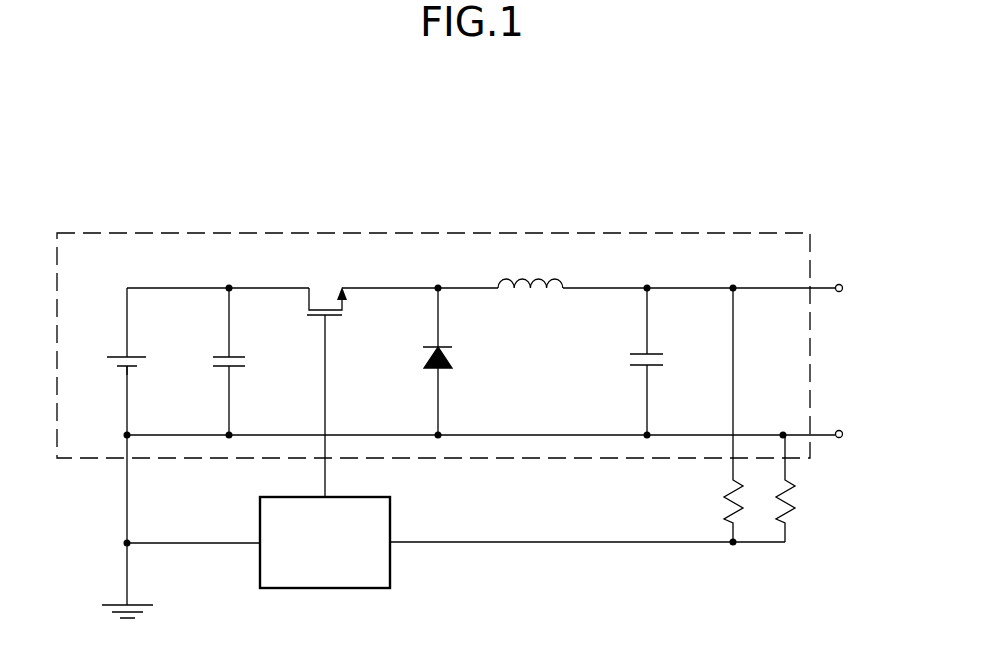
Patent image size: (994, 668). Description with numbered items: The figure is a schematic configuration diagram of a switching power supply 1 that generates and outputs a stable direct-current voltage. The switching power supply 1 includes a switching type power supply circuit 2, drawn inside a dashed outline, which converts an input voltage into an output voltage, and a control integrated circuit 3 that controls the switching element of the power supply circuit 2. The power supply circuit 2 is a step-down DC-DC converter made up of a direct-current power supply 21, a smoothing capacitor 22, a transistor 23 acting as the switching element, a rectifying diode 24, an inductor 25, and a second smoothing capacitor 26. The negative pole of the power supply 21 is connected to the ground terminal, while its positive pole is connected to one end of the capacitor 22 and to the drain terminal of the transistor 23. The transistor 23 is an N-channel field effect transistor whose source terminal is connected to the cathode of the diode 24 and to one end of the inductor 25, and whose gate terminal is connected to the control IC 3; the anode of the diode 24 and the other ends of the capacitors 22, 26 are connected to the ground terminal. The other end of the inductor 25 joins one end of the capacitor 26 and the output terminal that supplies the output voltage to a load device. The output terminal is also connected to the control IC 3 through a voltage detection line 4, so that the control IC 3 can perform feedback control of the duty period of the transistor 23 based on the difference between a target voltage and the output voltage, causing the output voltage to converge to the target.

The switching power supply 1 is at (221, 156).
The power supply circuit 2 is at (629, 233).
The control integrated circuit (IC) 3 is at (392, 507).
The voltage detection line 4 is at (504, 544).
The power supply 21 is at (137, 356).
The capacitor (C1) 22 is at (241, 356).
The transistor (Q1) 23 is at (309, 299).
The diode (D1) 24 is at (452, 359).
The inductor (L1) 25 is at (562, 287).
The capacitor (C2) 26 is at (650, 352).